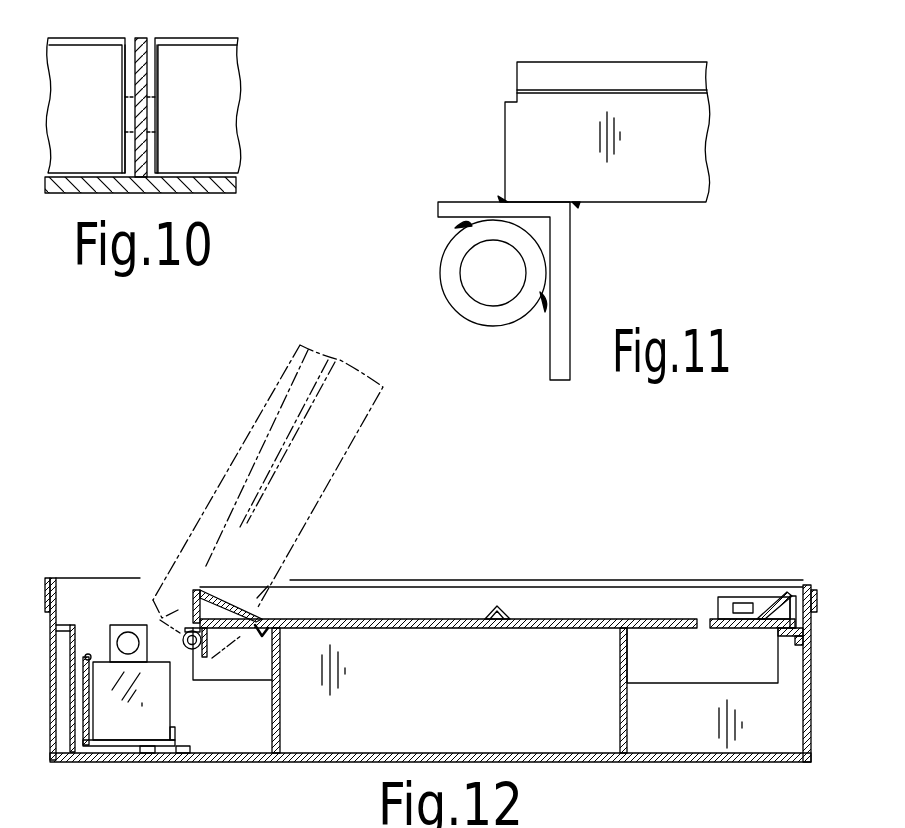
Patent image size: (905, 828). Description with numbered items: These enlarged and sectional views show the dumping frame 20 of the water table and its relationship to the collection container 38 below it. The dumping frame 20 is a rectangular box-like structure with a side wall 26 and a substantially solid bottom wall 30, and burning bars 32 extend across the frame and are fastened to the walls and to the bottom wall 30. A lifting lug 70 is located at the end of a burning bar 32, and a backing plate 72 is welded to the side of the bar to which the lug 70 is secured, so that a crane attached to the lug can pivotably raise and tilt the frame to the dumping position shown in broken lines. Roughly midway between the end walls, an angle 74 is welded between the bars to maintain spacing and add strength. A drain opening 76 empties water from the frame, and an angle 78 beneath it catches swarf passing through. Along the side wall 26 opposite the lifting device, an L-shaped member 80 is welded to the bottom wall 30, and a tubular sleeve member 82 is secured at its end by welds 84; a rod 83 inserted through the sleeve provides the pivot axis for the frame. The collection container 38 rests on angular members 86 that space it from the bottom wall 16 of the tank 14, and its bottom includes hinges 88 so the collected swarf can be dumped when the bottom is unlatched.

In FIG. 12, the housing 14 is at (806, 676).
In FIG. 12, the bottom wall 16 is at (568, 762).
In FIG. 11, the dumping frame 20 is at (676, 163).
In FIG. 12, the dumping frame 20 is at (273, 482).
In FIG. 12, the side wall 26 is at (176, 611).
In FIG. 10, the bottom wall 30 is at (208, 193).
In FIG. 12, the bottom wall 30 is at (576, 620).
In FIG. 10, the burning bar 32 is at (148, 77).
In FIG. 12, the collection container 38 is at (172, 712).
In FIG. 10, the lifting lug 70 is at (158, 118).
In FIG. 12, the lifting lug 70 is at (748, 601).
In FIG. 10, the backing plate 72 is at (128, 136).
In FIG. 12, the angle 74 is at (506, 612).
In FIG. 12, the drain opening 76 is at (703, 633).
In FIG. 12, the angle 78 is at (713, 642).
In FIG. 11, the L-shaped member 80 is at (573, 305).
In FIG. 11, the tubular sleeve member 82 is at (462, 322).
In FIG. 11, the rod 83 is at (488, 273).
In FIG. 11, the weld 84 is at (462, 224).
In FIG. 12, the angular member 86 is at (146, 754).
In FIG. 12, the hinge 88 is at (185, 758).